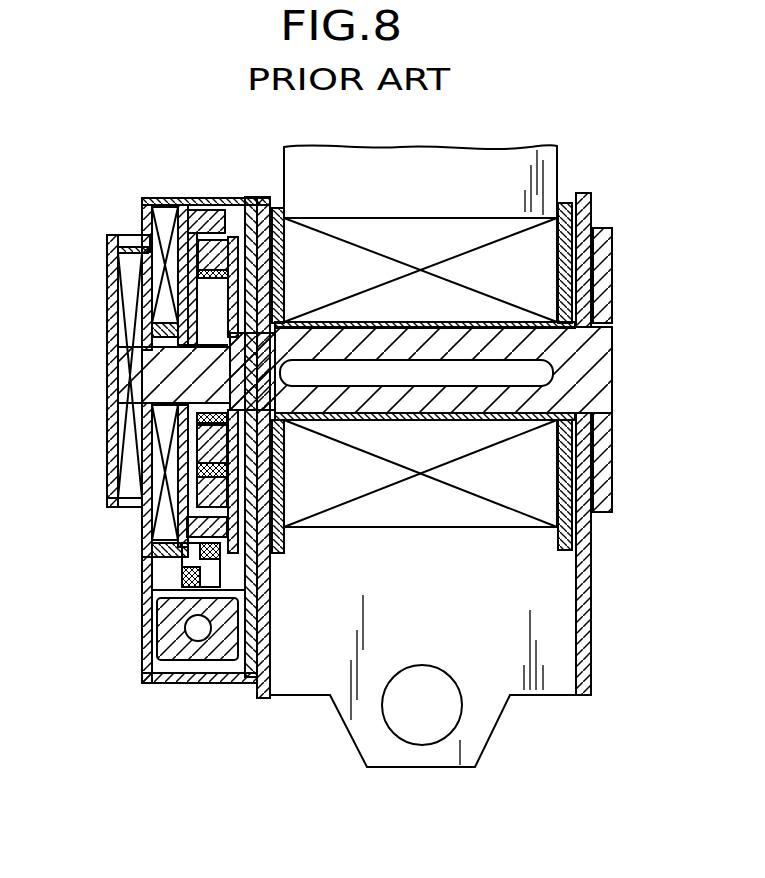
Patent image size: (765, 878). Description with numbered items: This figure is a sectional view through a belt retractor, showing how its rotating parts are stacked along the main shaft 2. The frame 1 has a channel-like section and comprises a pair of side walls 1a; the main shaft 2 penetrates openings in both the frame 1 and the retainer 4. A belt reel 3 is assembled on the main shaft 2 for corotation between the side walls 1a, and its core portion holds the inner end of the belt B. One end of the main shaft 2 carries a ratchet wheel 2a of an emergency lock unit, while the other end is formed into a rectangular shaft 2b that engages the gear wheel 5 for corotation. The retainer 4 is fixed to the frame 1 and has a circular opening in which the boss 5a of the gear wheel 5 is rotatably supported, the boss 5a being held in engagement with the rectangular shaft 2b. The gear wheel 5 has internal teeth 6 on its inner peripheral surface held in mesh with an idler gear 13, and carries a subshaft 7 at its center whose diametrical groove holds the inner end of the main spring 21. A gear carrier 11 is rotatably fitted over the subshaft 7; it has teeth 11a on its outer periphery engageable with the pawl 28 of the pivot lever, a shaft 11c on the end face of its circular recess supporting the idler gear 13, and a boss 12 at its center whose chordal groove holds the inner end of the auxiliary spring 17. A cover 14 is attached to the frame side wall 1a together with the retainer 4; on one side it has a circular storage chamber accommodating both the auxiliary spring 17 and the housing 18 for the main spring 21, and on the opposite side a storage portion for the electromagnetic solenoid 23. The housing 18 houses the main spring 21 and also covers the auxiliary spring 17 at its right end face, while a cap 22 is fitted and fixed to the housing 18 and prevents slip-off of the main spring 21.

The frame 1 is at (563, 598).
The side walls 1a is at (267, 665).
The main shaft 2 is at (408, 407).
The ratchet wheel 2a is at (605, 247).
The rectangular shaft 2b is at (262, 336).
The belt reel 3 is at (470, 427).
The retainer 4 is at (247, 197).
The gear wheel 5 is at (225, 210).
The boss 5a is at (287, 430).
The internal teeth 6 is at (215, 282).
The subshaft 7 is at (123, 392).
The gear carrier 11 is at (127, 233).
The teeth 11a is at (202, 218).
The shaft 11c is at (180, 453).
The boss 12 is at (160, 315).
The idler gear 13 is at (197, 430).
The cover 14 is at (143, 590).
The auxiliary spring 17 is at (163, 532).
The housing 18 is at (158, 275).
The main spring 21 is at (188, 273).
The cap 22 is at (108, 340).
The electromagnetic solenoid 23 is at (200, 663).
The pawl 28 is at (217, 553).
The belt B is at (550, 178).